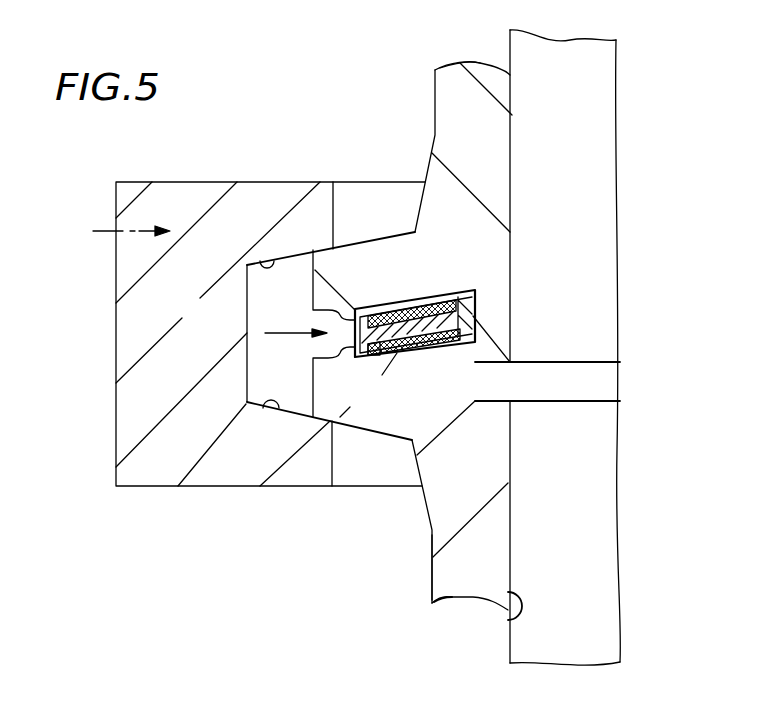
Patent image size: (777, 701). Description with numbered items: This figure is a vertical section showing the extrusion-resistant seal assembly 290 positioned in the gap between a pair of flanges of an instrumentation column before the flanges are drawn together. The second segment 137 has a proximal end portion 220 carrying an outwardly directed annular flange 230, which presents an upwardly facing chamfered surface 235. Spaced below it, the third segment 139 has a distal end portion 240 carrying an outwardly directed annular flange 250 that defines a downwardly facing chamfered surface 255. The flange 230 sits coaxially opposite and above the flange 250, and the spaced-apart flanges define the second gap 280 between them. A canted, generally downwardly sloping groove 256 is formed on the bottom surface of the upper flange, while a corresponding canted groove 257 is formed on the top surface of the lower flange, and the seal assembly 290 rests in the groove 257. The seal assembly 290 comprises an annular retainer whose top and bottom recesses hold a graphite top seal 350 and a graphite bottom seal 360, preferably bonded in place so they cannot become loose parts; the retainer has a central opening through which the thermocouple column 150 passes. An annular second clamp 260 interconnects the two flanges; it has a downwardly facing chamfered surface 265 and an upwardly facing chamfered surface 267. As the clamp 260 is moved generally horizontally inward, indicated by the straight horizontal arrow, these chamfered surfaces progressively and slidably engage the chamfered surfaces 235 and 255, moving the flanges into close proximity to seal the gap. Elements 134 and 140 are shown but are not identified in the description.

The lower cover edge 134 is at (445, 595).
The second segment 137 is at (443, 72).
The third segment 139 is at (442, 577).
The notch 140 is at (513, 622).
The thermocouple column 150 is at (608, 628).
The proximal end portion 220 is at (448, 108).
The flange 230 is at (323, 258).
The chamfered surface 235 is at (377, 235).
The distal end portion 240 is at (448, 543).
The flange 250 is at (353, 423).
The chamfered surface 255 is at (475, 325).
The groove 256 is at (415, 300).
The groove 257 is at (373, 358).
The second clamp 260 is at (130, 416).
The chamfered surface 265 is at (258, 258).
The chamfered surface 267 is at (273, 394).
The second gap 280 is at (390, 316).
The seal assembly 290 is at (278, 333).
The top seal 350 is at (457, 290).
The bottom seal 360 is at (430, 355).